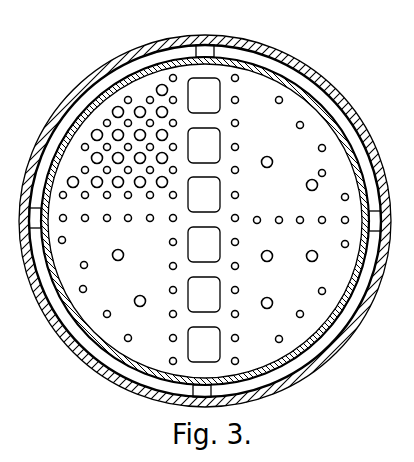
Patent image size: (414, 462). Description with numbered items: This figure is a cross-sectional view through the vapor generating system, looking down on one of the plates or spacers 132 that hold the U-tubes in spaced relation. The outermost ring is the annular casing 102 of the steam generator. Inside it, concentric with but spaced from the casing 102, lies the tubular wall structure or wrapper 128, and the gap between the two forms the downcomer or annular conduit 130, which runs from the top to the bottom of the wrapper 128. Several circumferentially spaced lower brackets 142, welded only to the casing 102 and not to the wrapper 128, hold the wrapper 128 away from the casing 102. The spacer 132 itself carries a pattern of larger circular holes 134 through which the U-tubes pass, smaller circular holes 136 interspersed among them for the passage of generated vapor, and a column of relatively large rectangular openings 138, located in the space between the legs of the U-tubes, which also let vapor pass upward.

The casing 102 is at (293, 63).
The downcomer or annular conduit 130 is at (313, 80).
The wrapper 128 is at (316, 98).
The spacer 132 is at (321, 118).
The circular holes 134 is at (96, 190).
The additional circular holes 136 is at (169, 241).
The rectangular openings 138 is at (221, 90).
The lower brackets 142 is at (215, 46).